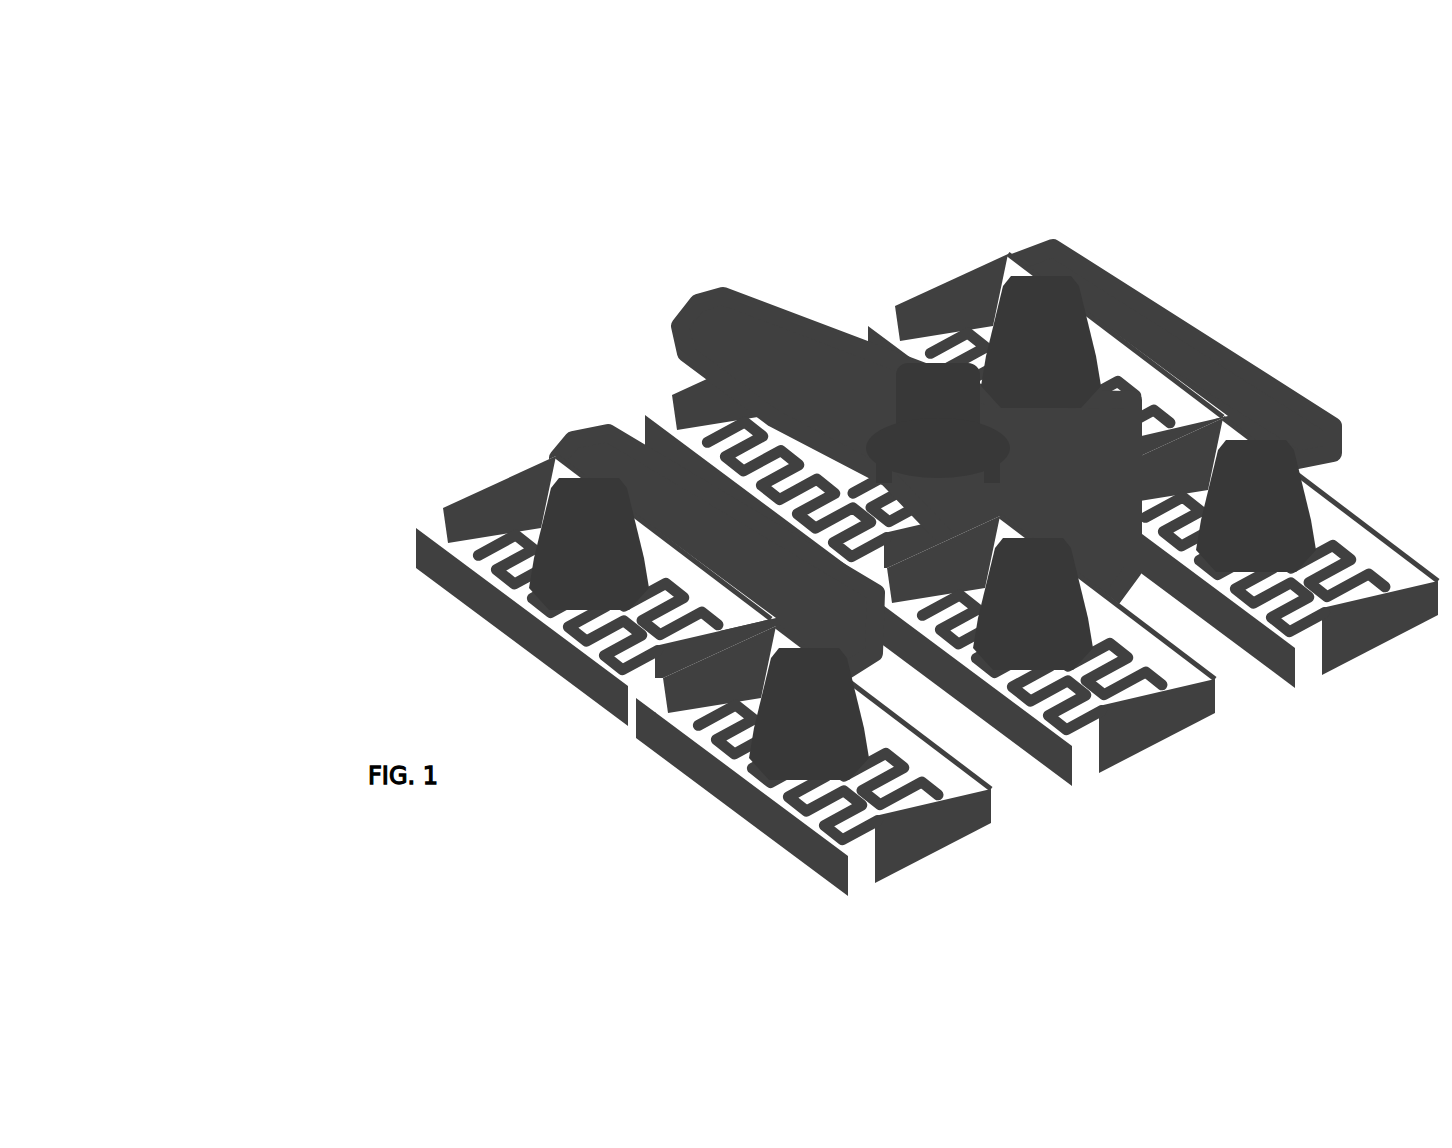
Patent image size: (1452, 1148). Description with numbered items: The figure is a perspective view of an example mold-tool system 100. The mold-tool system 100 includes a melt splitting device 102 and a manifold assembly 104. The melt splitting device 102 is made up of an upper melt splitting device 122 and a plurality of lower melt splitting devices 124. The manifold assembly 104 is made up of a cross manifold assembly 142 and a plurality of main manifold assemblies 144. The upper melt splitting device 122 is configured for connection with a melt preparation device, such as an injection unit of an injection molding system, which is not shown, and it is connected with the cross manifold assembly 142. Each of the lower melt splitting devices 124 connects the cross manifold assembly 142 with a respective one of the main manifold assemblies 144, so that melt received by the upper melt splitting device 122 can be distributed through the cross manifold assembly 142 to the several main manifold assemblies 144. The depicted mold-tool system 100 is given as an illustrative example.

The mold-tool system 100 is at (262, 173).
The melt splitting device 102 is at (616, 223).
The manifold assembly 104 is at (760, 156).
The upper melt splitting device 122 is at (890, 360).
The lower melt splitting device 124 is at (983, 337).
The cross manifold assembly 142 is at (1047, 235).
The main manifold assembly 144 is at (985, 255).